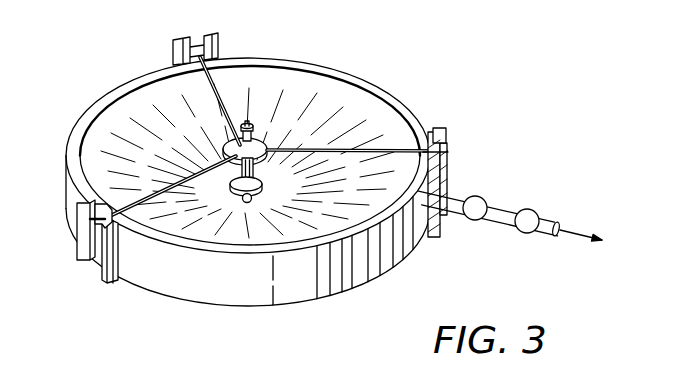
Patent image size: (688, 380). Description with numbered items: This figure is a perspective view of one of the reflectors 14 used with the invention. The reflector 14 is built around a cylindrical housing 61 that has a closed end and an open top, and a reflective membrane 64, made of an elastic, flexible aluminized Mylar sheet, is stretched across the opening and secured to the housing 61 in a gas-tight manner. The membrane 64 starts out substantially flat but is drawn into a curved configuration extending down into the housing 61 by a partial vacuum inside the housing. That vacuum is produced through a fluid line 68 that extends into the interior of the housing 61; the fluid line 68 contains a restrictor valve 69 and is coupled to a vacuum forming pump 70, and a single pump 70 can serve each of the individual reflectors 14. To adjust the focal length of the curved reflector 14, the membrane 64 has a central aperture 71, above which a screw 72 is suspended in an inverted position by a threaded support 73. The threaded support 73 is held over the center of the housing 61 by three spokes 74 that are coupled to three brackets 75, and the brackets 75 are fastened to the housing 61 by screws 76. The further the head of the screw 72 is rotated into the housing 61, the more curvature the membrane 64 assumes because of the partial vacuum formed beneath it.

The reflector 14 is at (383, 83).
The cylindrical housing 61 is at (377, 256).
The reflective membrane 64 is at (326, 77).
The fluid line 68 is at (503, 209).
The restrictor valve 69 is at (467, 198).
The vacuum forming pump 70 is at (530, 209).
The central aperture 71 is at (247, 203).
The screw 72 is at (258, 175).
The threaded support 73 is at (268, 138).
The spokes 74 is at (252, 92).
The brackets 75 is at (172, 50).
The screws 76 is at (90, 260).